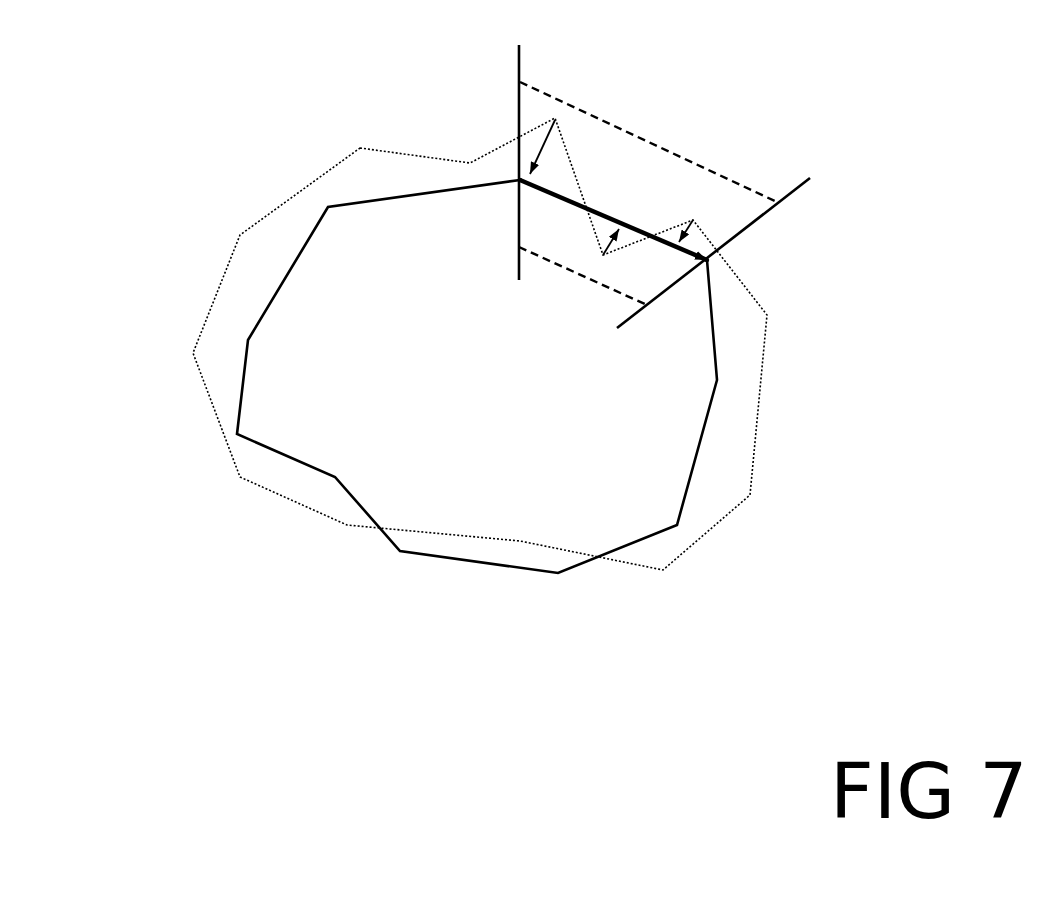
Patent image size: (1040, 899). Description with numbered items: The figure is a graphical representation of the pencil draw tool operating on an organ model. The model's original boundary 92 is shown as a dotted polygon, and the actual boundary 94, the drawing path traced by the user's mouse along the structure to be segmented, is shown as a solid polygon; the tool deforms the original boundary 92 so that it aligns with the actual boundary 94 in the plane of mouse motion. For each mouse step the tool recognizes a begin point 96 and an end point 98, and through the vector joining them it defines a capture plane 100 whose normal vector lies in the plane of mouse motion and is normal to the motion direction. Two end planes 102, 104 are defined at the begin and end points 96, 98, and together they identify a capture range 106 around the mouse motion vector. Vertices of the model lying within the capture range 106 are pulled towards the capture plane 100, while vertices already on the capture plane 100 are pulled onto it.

The original boundary 92 is at (302, 190).
The actual boundary 94 is at (693, 467).
The begin point 96 is at (519, 179).
The end point 98 is at (710, 259).
The capture plane 100 is at (588, 207).
The end plane 102 is at (519, 63).
The end plane 104 is at (798, 192).
The capture range 106 is at (608, 155).